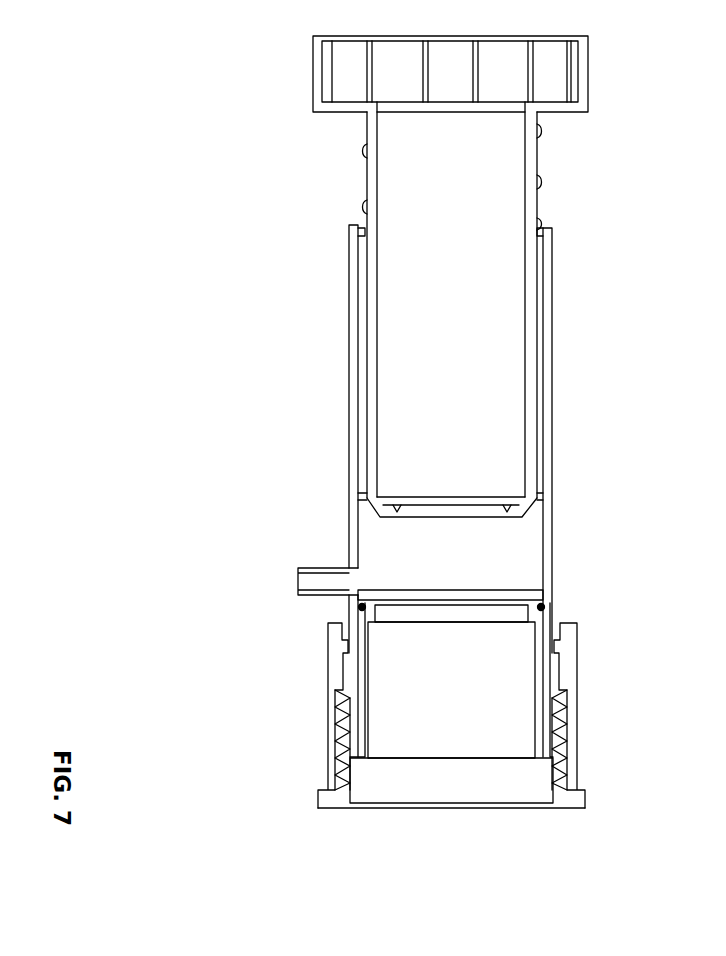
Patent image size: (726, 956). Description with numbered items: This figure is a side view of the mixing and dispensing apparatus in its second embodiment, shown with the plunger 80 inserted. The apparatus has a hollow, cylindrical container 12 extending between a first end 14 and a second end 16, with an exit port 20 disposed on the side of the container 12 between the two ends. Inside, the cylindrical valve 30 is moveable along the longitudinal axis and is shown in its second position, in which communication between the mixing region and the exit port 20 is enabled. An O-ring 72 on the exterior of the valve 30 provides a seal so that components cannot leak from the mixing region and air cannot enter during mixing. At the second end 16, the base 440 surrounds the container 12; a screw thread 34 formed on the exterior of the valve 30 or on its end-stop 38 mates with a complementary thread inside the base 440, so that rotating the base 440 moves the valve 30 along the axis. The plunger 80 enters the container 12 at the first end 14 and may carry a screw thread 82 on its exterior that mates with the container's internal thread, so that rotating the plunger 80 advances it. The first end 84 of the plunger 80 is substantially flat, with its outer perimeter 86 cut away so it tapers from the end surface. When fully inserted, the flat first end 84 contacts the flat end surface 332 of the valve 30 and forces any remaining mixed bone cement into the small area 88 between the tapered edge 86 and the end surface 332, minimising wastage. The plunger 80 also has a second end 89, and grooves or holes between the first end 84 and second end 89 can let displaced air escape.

The container 12 is at (545, 358).
The first end 14 is at (186, 205).
The second end 16 is at (196, 683).
The exit port 20 is at (332, 580).
The valve 30 is at (407, 711).
The screw thread 34 is at (340, 746).
The end-stop 38 is at (372, 783).
The O-ring 72 is at (360, 606).
The plunger 80 is at (507, 297).
The screw thread 82 is at (366, 152).
The first end 84 is at (510, 470).
The outer perimeter 86 is at (530, 507).
The small area 88 is at (368, 509).
The second end 89 is at (508, 146).
The end surface 332 is at (490, 593).
The base 440 is at (575, 712).